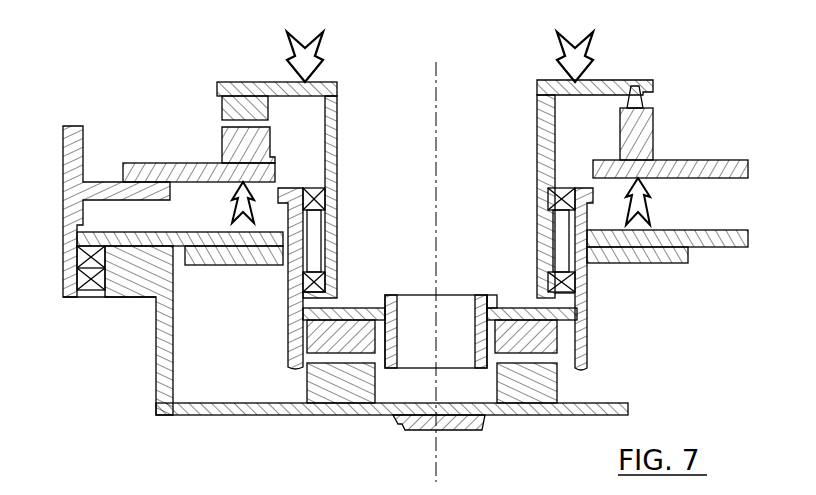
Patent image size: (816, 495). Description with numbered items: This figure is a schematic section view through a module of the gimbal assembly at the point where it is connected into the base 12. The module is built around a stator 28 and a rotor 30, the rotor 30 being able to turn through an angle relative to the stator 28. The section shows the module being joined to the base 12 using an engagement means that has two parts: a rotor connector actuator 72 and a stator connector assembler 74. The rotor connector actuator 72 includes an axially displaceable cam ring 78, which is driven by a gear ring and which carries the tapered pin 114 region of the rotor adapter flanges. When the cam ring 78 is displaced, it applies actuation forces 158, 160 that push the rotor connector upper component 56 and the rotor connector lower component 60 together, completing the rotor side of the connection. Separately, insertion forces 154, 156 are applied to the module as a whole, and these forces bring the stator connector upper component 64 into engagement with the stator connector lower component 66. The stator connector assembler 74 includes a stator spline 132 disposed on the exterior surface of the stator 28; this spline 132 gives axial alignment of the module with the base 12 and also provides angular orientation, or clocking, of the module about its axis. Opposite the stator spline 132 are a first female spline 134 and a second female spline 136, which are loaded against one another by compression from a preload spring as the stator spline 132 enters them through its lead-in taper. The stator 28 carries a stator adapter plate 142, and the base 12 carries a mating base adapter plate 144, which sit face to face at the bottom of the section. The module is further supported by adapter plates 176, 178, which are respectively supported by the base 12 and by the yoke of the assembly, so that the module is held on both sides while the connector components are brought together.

The base 12 is at (460, 430).
The stator 28 is at (590, 343).
The rotor 30 is at (339, 101).
The rotor connector upper component 56 is at (222, 112).
The rotor connector lower component 60 is at (222, 140).
The stator connector upper component 64 is at (307, 335).
The stator connector lower component 66 is at (310, 385).
The rotor connector actuator 72 is at (748, 178).
The stator connector assembler 74 is at (732, 253).
The cam ring 78 is at (279, 173).
The tapered pin 114 is at (646, 100).
The stator spline 132 is at (590, 322).
The first female spline 134 is at (670, 232).
The second female spline 136 is at (667, 263).
The stator adapter plate 142 is at (360, 312).
The base adapter plate 144 is at (350, 415).
The insertion force 154 is at (319, 50).
The insertion force 156 is at (590, 50).
The actuation force 158 is at (233, 205).
The actuation force 160 is at (651, 203).
The adapter plate 176 is at (165, 277).
The adapter plate 178 is at (71, 127).